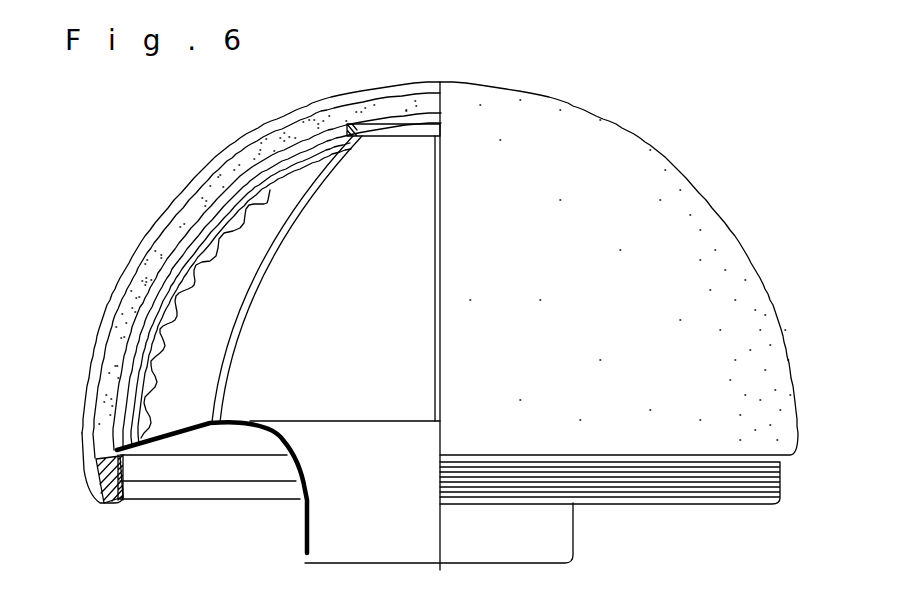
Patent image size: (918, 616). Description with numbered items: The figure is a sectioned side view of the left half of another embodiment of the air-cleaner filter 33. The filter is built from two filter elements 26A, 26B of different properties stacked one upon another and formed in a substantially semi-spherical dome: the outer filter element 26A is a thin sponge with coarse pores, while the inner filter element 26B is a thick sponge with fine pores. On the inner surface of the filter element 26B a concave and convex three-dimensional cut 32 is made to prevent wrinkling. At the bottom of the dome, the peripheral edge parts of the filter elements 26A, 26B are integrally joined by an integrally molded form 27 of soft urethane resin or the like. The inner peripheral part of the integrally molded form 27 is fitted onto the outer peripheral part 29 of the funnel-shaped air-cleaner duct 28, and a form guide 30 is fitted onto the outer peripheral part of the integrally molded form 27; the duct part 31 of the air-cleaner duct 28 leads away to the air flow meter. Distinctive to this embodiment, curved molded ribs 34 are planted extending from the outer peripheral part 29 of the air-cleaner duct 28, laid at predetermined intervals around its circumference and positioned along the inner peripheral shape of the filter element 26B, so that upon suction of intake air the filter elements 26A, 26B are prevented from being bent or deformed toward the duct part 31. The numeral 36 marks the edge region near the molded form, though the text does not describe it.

The air-cleaner filter 33 is at (148, 192).
The filter element 26A is at (118, 272).
The filter element 26B is at (108, 362).
The molded ribs 34 is at (150, 355).
The three-dimensional cut 32 is at (183, 283).
The form guide 30 is at (750, 494).
The air-cleaner duct 28 is at (292, 528).
The duct part 31 is at (313, 520).
The outer peripheral part 29 is at (120, 468).
The integrally molded form 27 is at (112, 500).
The shell edge 36 is at (93, 490).